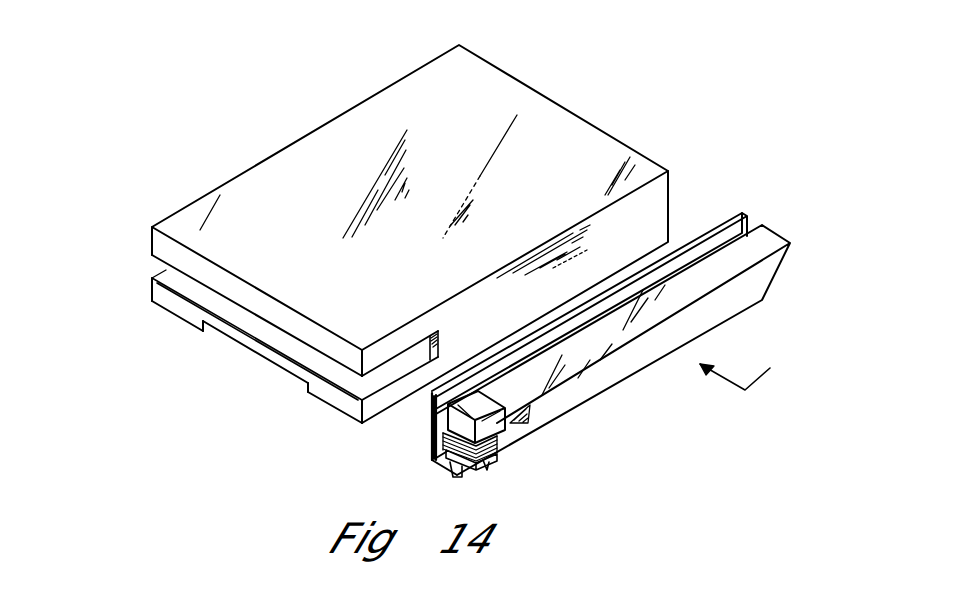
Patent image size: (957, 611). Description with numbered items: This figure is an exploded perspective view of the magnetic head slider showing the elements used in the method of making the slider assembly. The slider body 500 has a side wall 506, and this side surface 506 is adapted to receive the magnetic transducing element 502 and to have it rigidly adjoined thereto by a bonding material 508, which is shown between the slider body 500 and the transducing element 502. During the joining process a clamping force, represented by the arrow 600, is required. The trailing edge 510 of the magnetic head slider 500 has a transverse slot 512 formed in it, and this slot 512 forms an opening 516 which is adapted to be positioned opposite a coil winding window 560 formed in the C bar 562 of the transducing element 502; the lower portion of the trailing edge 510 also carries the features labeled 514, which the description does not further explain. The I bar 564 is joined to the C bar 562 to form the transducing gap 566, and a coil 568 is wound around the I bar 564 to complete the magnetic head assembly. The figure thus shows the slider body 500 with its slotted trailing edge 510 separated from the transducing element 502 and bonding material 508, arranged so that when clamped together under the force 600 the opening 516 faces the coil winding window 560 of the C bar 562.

The slider body 500 is at (568, 130).
The magnetic transducing element 502 is at (790, 262).
The side wall 506 is at (657, 203).
The bonding material 508 is at (748, 213).
The trailing edge 510 is at (210, 271).
The transverse slot 512 is at (160, 260).
The notches 514 is at (185, 306).
The opening 516 is at (402, 363).
The coil winding window 560 is at (505, 430).
The C bar 562 is at (587, 390).
The I bar 564 is at (443, 433).
The transducing gap 566 is at (487, 467).
The coil 568 is at (497, 443).
The clamping force arrow 600 is at (755, 366).